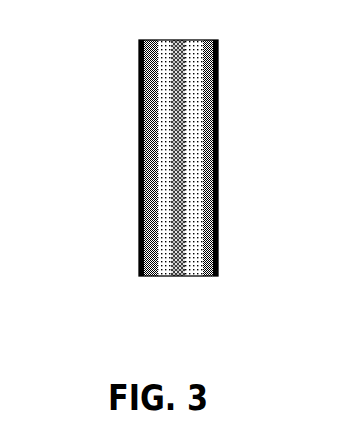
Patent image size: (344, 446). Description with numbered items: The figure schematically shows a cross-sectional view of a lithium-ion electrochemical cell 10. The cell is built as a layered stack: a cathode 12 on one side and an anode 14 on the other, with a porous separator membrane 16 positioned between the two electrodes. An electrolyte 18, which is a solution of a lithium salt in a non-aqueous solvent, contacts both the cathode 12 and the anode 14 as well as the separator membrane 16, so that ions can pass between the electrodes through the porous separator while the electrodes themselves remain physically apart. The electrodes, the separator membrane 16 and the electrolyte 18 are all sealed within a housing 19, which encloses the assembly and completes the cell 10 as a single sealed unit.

The lithium-ion electrochemical cell 10 is at (100, 55).
The cathode 12 is at (139, 95).
The anode 14 is at (219, 82).
The porous separator membrane 16 is at (190, 276).
The electrolyte 18 is at (139, 136).
The housing 19 is at (195, 38).